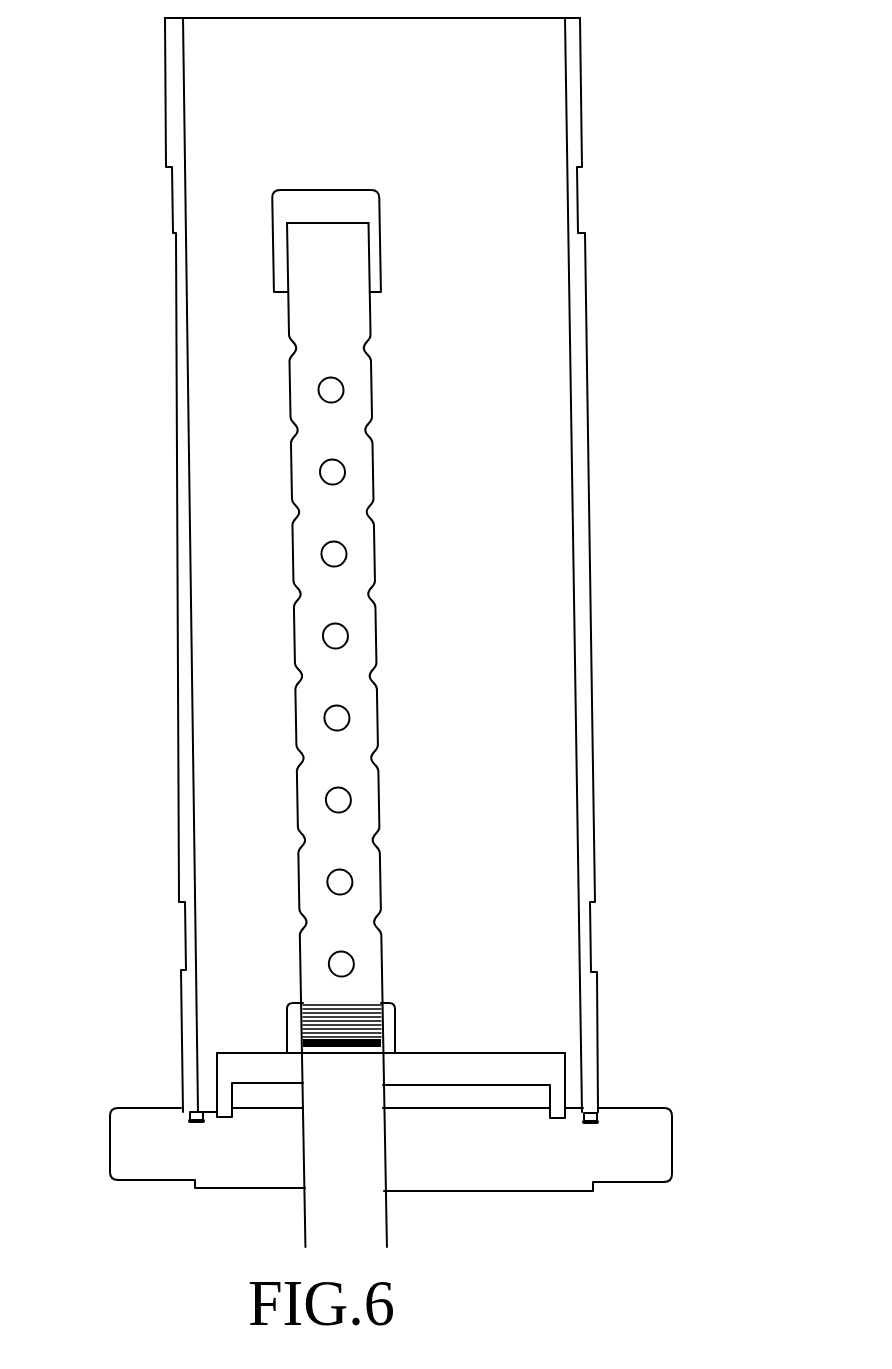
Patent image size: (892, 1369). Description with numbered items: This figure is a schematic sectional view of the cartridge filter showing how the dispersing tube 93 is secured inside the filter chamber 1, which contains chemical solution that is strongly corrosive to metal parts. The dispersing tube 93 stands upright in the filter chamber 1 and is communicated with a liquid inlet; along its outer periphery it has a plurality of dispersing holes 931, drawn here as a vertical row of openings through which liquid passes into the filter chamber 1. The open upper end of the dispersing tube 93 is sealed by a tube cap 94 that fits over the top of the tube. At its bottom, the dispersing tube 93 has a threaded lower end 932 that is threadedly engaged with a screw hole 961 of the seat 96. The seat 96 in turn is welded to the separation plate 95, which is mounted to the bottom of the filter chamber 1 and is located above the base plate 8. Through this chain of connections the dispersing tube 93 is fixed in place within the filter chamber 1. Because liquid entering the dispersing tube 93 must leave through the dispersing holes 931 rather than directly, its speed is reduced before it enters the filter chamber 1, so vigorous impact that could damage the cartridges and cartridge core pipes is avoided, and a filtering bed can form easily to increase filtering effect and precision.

The filter chamber 1 is at (578, 382).
The base plate 8 is at (627, 1152).
The dispersing tube 93 is at (322, 272).
The dispersing holes 931 is at (333, 391).
The threaded lower end 932 is at (330, 1010).
The tube cap 94 is at (375, 240).
The separation plate 95 is at (547, 1070).
The seat 96 is at (293, 1028).
The screw hole 961 is at (382, 1027).